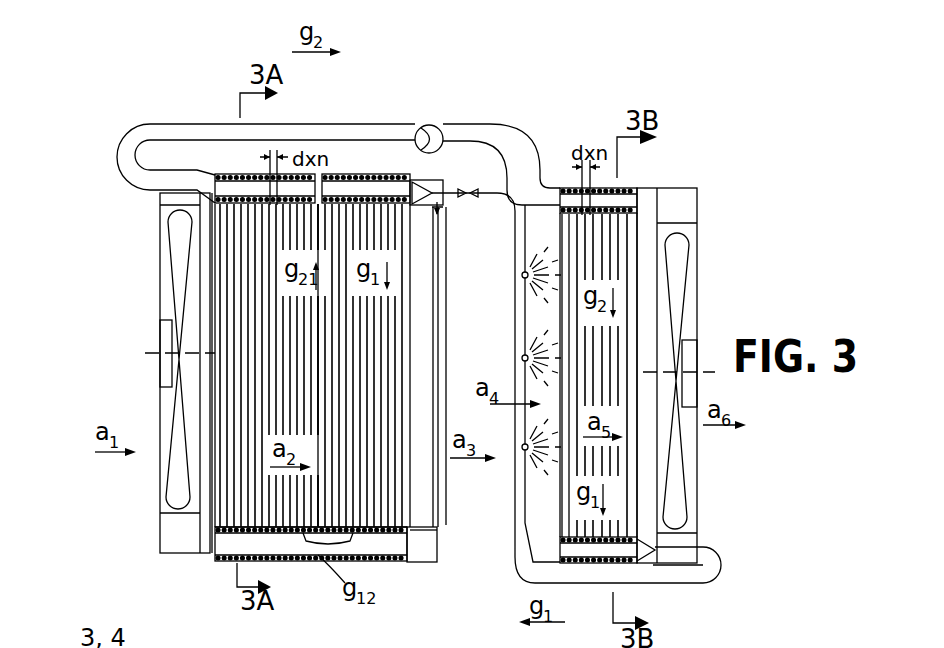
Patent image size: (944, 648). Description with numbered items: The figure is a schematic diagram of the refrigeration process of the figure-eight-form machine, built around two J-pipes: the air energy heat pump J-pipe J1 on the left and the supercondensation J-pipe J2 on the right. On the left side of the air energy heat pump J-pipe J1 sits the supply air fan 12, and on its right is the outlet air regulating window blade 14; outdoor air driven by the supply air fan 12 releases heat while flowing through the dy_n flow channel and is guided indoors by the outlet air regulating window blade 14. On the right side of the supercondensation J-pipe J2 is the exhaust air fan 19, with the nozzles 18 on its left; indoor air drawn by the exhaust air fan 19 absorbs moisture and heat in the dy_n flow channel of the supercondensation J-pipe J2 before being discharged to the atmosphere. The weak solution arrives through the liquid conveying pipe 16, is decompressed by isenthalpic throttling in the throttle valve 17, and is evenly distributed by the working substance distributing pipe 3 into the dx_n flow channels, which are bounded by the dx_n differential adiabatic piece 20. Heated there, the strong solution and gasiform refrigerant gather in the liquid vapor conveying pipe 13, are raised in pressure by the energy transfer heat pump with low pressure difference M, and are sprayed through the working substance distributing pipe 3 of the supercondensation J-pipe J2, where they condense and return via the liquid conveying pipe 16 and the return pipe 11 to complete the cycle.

The working substance distributing pipe 3 is at (232, 173).
The return pipe 11 is at (378, 537).
The supply air fan 12 is at (172, 237).
The liquid vapor conveying pipe 13 is at (211, 123).
The outlet air regulating window blade 14 is at (436, 305).
The liquid conveying pipe 16 is at (457, 190).
The throttle valve 17 is at (478, 192).
The nozzle 18 is at (522, 275).
The exhaust air fan 19 is at (690, 243).
The dx_n differential adiabatic piece 20 is at (345, 246).
The energy transfer heat pump with low pressure difference M is at (437, 126).
The air energy heat pump J-pipe J1 is at (430, 535).
The supercondensation J-pipe J2 is at (640, 228).